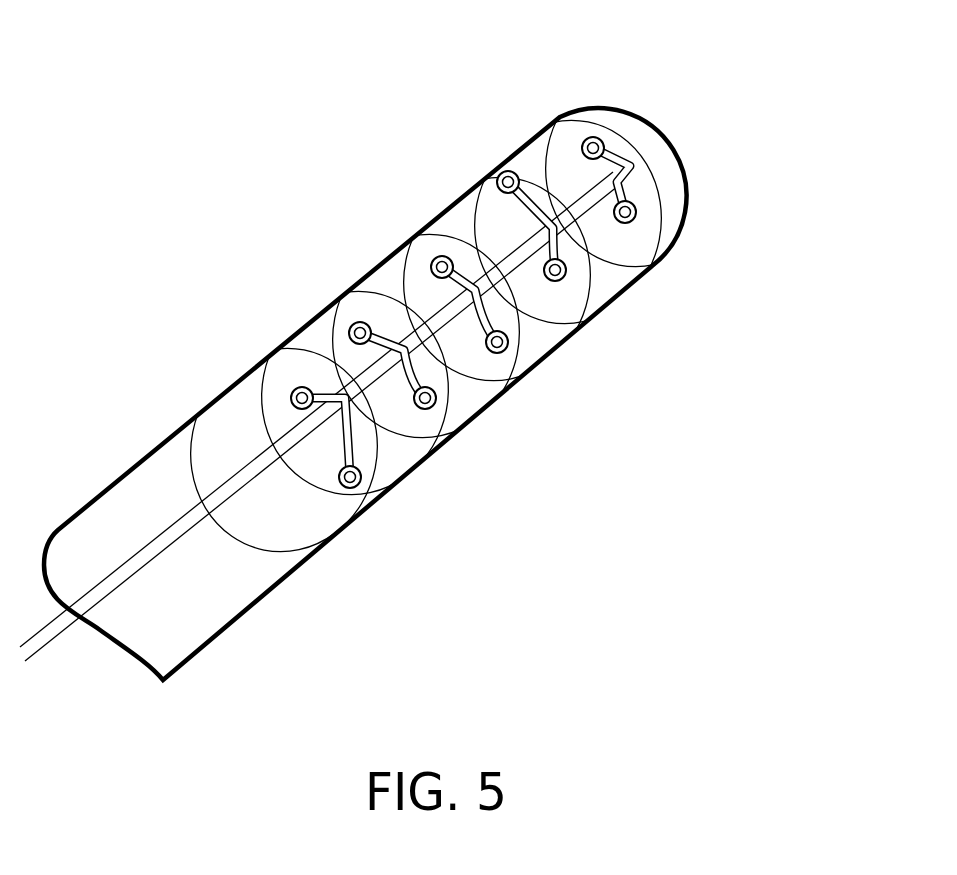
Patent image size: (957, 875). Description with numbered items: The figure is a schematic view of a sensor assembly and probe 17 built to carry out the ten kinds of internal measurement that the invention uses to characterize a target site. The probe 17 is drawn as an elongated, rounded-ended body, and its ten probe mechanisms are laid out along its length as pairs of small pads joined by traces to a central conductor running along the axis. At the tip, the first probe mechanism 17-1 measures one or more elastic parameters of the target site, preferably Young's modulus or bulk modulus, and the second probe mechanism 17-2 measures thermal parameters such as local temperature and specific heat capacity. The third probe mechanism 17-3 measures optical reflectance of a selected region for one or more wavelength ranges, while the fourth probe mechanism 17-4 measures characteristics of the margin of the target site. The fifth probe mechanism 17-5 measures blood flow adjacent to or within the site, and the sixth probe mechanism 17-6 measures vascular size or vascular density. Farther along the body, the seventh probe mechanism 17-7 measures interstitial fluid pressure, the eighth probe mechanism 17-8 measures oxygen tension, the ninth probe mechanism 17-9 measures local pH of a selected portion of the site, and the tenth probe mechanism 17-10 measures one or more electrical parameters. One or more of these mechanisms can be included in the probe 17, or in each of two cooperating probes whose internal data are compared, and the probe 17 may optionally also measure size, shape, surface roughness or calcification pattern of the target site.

The probe 17 is at (718, 87).
The first probe mechanism 17-1 is at (636, 212).
The second probe mechanism 17-2 is at (583, 143).
The third probe mechanism 17-3 is at (566, 270).
The fourth probe mechanism 17-4 is at (497, 181).
The fifth probe mechanism 17-5 is at (508, 343).
The sixth probe mechanism 17-6 is at (431, 266).
The seventh probe mechanism 17-7 is at (436, 398).
The eighth probe mechanism 17-8 is at (349, 332).
The ninth probe mechanism 17-9 is at (361, 478).
The tenth probe mechanism 17-10 is at (291, 397).